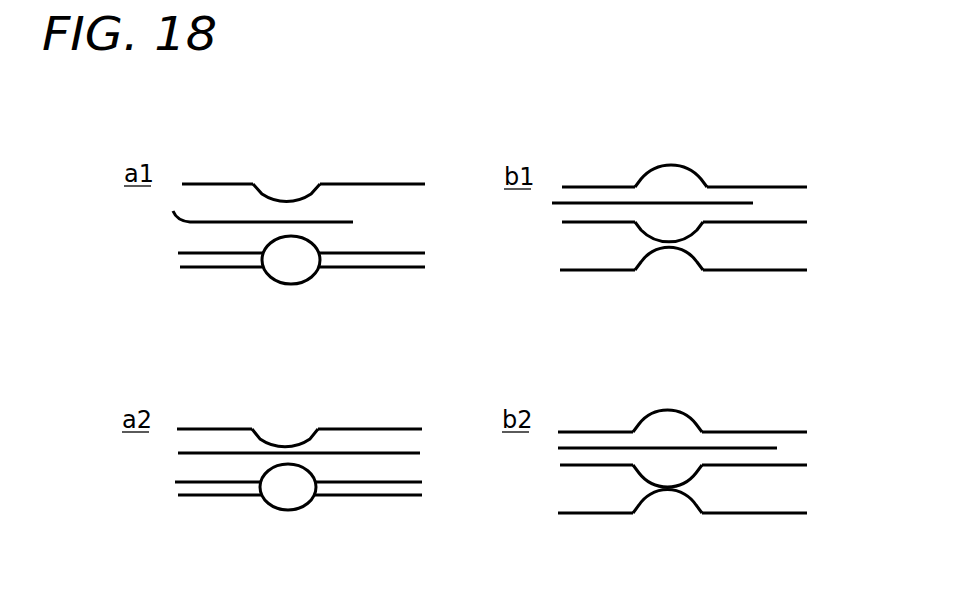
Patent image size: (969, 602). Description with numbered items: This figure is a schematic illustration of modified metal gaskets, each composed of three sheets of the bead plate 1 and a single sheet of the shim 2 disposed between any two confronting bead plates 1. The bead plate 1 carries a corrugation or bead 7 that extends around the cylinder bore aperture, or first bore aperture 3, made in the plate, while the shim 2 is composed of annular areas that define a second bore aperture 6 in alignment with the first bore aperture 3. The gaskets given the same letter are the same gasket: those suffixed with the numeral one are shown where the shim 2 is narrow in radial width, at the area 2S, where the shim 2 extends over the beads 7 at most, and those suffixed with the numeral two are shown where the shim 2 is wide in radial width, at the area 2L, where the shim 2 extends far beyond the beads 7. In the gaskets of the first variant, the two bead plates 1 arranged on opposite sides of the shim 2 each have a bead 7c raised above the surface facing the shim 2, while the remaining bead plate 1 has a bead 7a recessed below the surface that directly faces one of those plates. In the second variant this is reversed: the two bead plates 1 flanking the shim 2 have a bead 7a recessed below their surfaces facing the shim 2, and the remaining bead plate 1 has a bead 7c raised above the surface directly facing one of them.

The bead plate 1 is at (396, 184).
The first bore aperture 3 is at (183, 184).
The second bore aperture 6 is at (560, 448).
The shim 2 is at (440, 286).
The area narrow in radial width 2S is at (225, 220).
The area long in radial width 2L is at (222, 453).
The bead 7 is at (505, 352).
The recessed bead 7a is at (283, 283).
The raised bead 7c is at (287, 203).